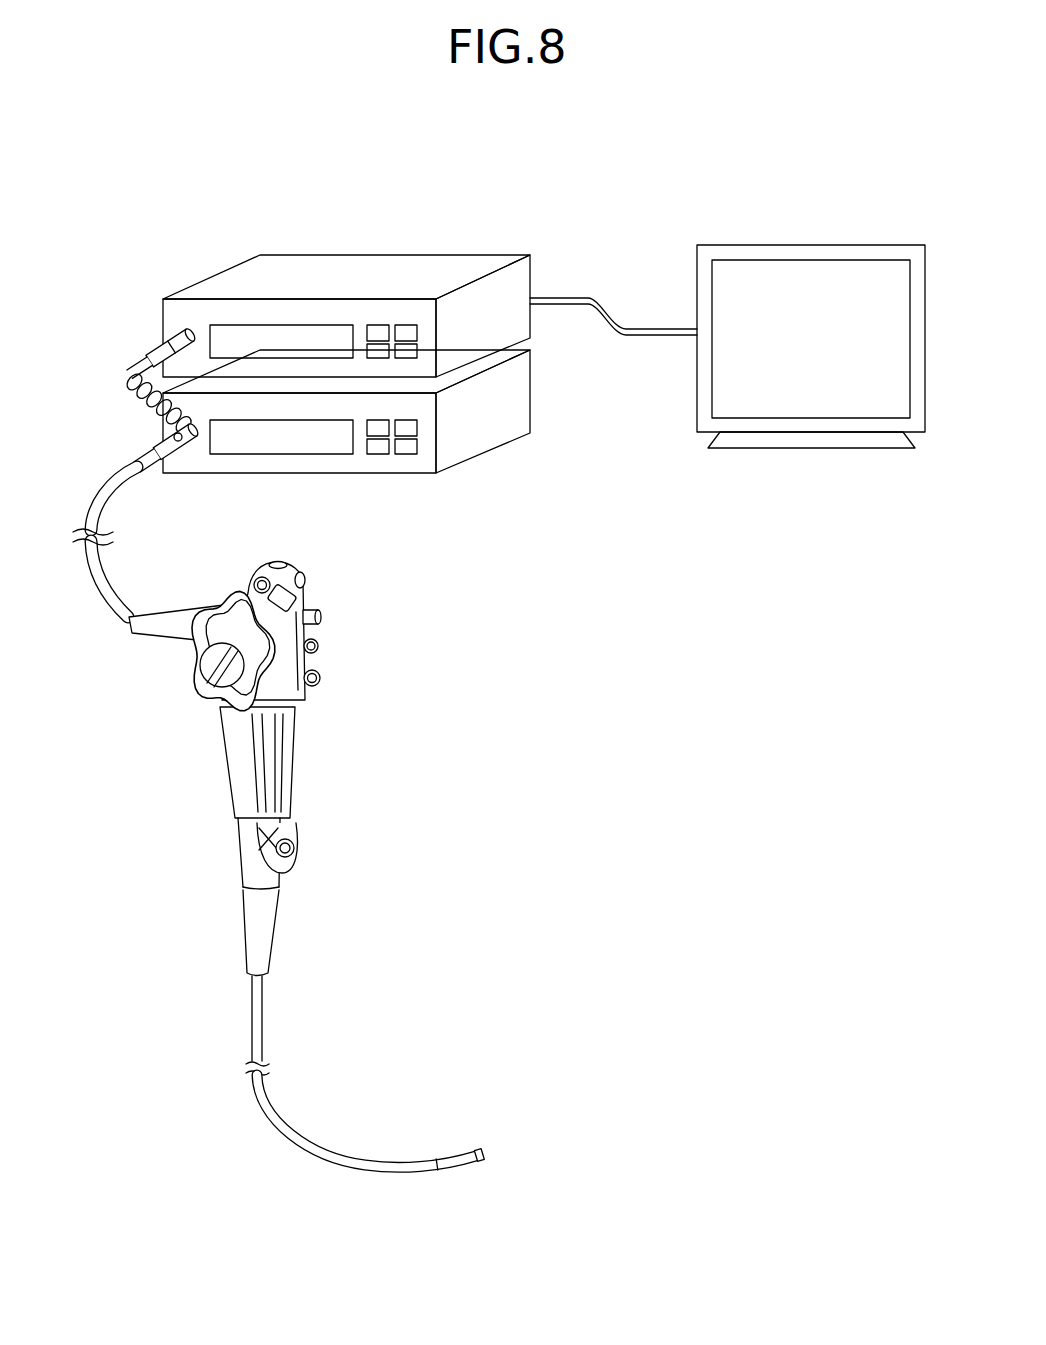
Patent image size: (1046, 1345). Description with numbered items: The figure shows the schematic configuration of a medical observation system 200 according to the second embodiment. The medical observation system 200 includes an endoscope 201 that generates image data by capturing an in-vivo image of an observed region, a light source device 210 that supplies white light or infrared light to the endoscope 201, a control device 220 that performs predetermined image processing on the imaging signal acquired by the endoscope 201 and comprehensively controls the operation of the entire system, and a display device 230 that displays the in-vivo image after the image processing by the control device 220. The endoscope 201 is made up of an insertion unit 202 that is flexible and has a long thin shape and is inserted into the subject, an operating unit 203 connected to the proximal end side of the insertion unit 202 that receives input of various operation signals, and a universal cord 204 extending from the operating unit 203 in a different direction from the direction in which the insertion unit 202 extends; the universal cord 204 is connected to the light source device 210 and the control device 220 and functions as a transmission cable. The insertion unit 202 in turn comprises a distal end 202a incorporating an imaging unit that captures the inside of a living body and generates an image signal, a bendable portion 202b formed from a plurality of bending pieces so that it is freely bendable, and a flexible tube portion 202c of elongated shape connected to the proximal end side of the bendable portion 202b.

The medical observation system 200 is at (858, 167).
The endoscope 201 is at (342, 587).
The insertion unit 202 is at (328, 1131).
The distal end 202a is at (477, 1162).
The bendable portion 202b is at (448, 1170).
The flexible tube portion 202c is at (375, 1170).
The operating unit 203 is at (295, 568).
The universal cord 204 is at (115, 497).
The light source device 210 is at (523, 389).
The control device 220 is at (495, 262).
The display device 230 is at (813, 252).